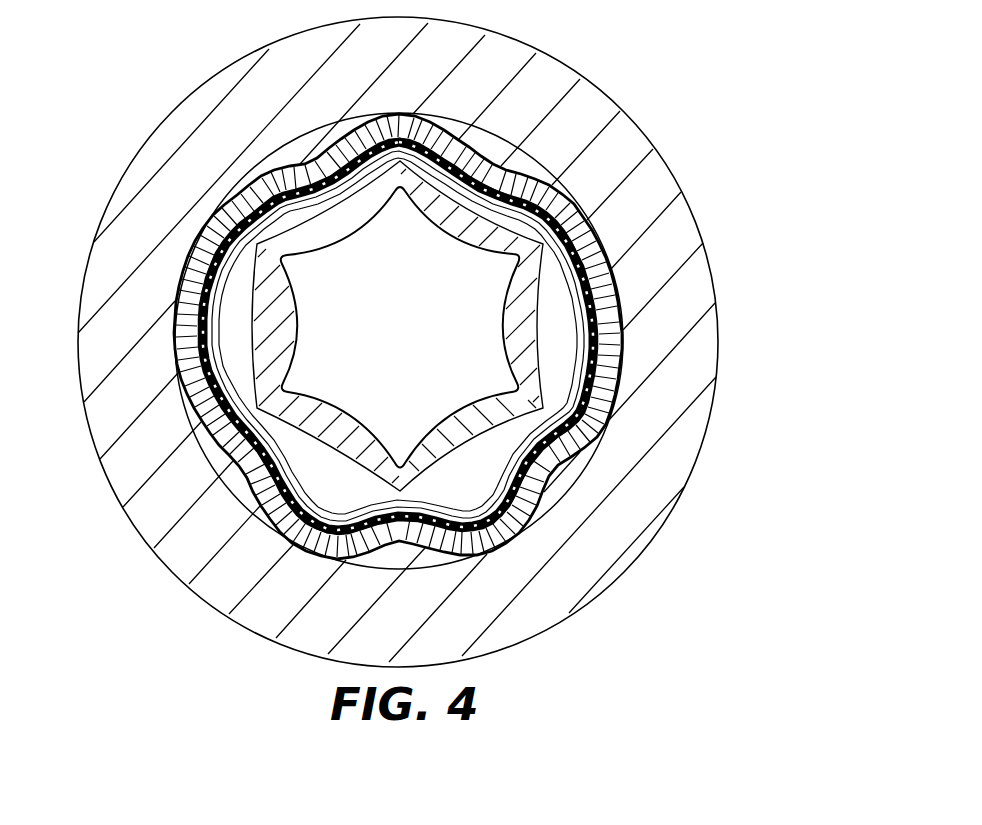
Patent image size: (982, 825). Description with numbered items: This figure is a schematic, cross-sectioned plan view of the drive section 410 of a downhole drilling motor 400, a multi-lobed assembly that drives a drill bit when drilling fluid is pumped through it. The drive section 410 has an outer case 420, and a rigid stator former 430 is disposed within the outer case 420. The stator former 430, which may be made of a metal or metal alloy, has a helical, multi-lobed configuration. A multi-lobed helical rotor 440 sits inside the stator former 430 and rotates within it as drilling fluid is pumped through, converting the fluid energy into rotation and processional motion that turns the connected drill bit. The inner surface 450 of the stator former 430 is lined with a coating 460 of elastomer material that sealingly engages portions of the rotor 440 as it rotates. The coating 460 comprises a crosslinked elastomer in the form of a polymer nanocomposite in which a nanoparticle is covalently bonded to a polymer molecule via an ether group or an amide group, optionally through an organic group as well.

The downhole drilling motor 400 is at (614, 604).
The drive section 410 is at (579, 110).
The outer case 420 is at (683, 284).
The stator former 430 is at (485, 548).
The rotor 440 is at (583, 227).
The inner surface 450 is at (578, 443).
The coating 460 is at (580, 335).